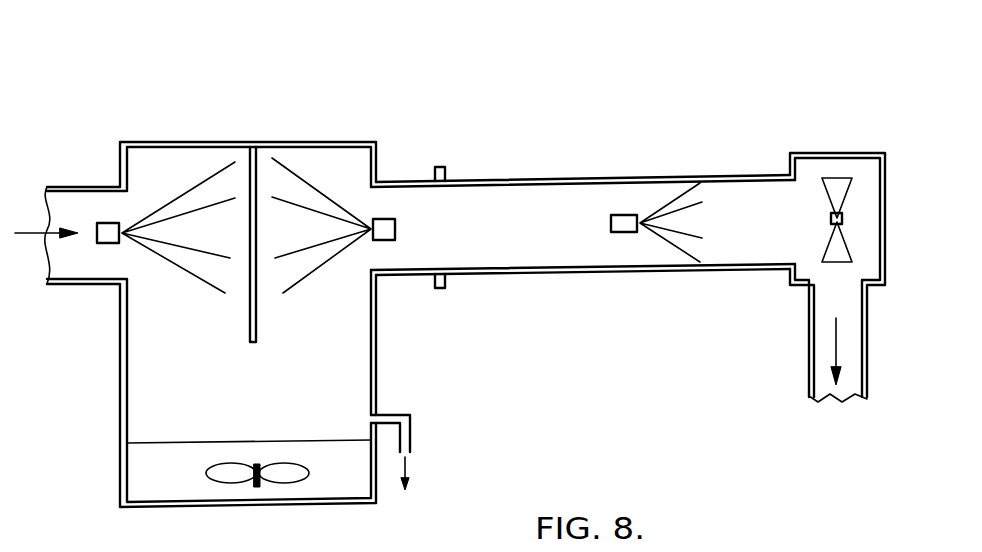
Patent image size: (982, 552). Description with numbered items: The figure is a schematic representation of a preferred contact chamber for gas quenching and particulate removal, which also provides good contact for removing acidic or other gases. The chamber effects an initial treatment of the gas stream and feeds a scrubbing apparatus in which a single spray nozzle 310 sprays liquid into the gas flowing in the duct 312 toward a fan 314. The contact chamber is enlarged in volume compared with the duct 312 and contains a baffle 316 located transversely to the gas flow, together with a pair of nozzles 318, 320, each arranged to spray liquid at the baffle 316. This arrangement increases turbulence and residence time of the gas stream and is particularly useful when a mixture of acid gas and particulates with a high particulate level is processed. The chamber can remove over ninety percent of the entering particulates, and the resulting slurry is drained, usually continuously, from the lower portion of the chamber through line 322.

The spray nozzle 310 is at (630, 215).
The duct 312 is at (511, 180).
The fan 314 is at (887, 172).
The baffle 316 is at (254, 150).
The nozzle 318 is at (107, 223).
The nozzle 320 is at (385, 219).
The line 322 is at (411, 437).